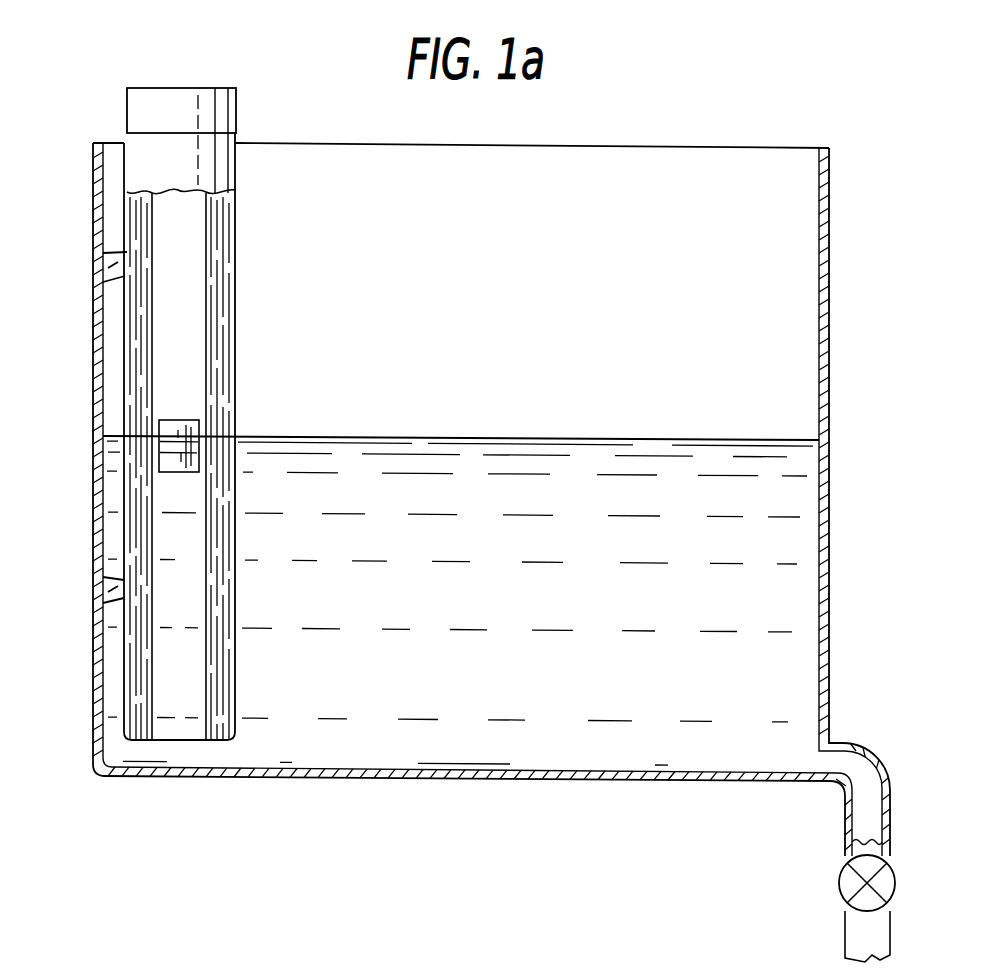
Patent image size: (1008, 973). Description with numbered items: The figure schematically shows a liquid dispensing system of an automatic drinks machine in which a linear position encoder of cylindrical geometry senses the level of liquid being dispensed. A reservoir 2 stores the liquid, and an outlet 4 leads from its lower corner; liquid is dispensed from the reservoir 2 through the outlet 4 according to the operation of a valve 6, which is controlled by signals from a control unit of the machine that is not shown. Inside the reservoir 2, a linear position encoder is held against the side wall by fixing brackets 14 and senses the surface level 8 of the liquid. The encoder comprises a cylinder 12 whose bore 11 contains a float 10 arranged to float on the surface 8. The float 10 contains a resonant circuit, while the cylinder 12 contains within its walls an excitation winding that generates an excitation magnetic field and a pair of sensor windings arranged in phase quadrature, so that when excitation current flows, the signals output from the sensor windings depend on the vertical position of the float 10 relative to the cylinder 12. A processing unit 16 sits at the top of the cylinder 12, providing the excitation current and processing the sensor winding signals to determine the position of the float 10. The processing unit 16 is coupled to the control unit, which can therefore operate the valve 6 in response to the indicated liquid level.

The reservoir 2 is at (831, 178).
The outlet 4 is at (863, 793).
The valve 6 is at (838, 880).
The surface level 8 is at (380, 437).
The float 10 is at (180, 420).
The bore 11 is at (183, 323).
The cylinder 12 is at (236, 240).
The fixing brackets 14 is at (112, 263).
The processing unit 16 is at (208, 115).